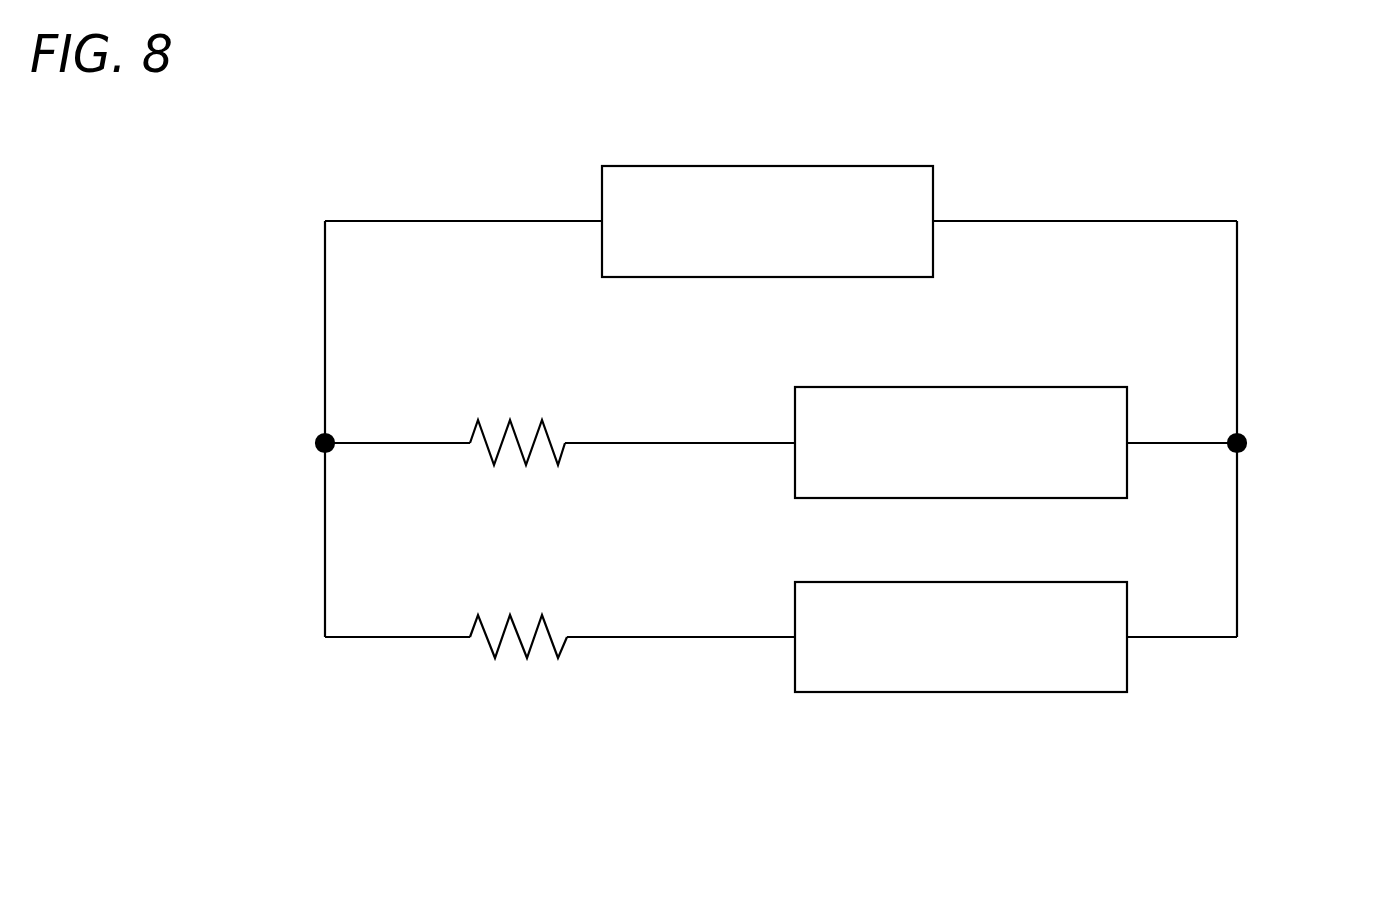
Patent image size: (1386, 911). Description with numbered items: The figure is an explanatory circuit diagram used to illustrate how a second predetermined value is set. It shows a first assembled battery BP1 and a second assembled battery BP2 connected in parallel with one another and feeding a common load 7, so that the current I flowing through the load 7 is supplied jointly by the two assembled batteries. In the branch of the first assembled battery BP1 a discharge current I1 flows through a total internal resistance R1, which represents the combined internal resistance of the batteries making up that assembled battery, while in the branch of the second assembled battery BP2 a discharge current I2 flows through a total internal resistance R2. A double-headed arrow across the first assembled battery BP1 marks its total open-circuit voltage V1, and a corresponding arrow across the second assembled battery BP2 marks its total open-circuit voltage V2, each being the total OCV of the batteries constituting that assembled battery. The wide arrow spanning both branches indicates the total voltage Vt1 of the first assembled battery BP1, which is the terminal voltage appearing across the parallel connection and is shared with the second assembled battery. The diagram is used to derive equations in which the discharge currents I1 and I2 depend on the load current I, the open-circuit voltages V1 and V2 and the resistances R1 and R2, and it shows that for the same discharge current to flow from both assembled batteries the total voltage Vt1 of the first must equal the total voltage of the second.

The load 7 is at (823, 166).
The total internal resistance of the first assembled battery R1 is at (517, 436).
The total internal resistance of the second assembled battery R2 is at (518, 630).
The discharge current of the first assembled battery I1 is at (712, 416).
The discharge current of the second assembled battery I2 is at (712, 609).
The load current I is at (307, 344).
The first assembled battery BP1 is at (1127, 413).
The second assembled battery BP2 is at (1127, 665).
The total OCV of the first assembled battery V1 is at (797, 361).
The total OCV of the second assembled battery V2 is at (797, 553).
The total voltage of the first assembled battery Vt1 is at (1126, 748).